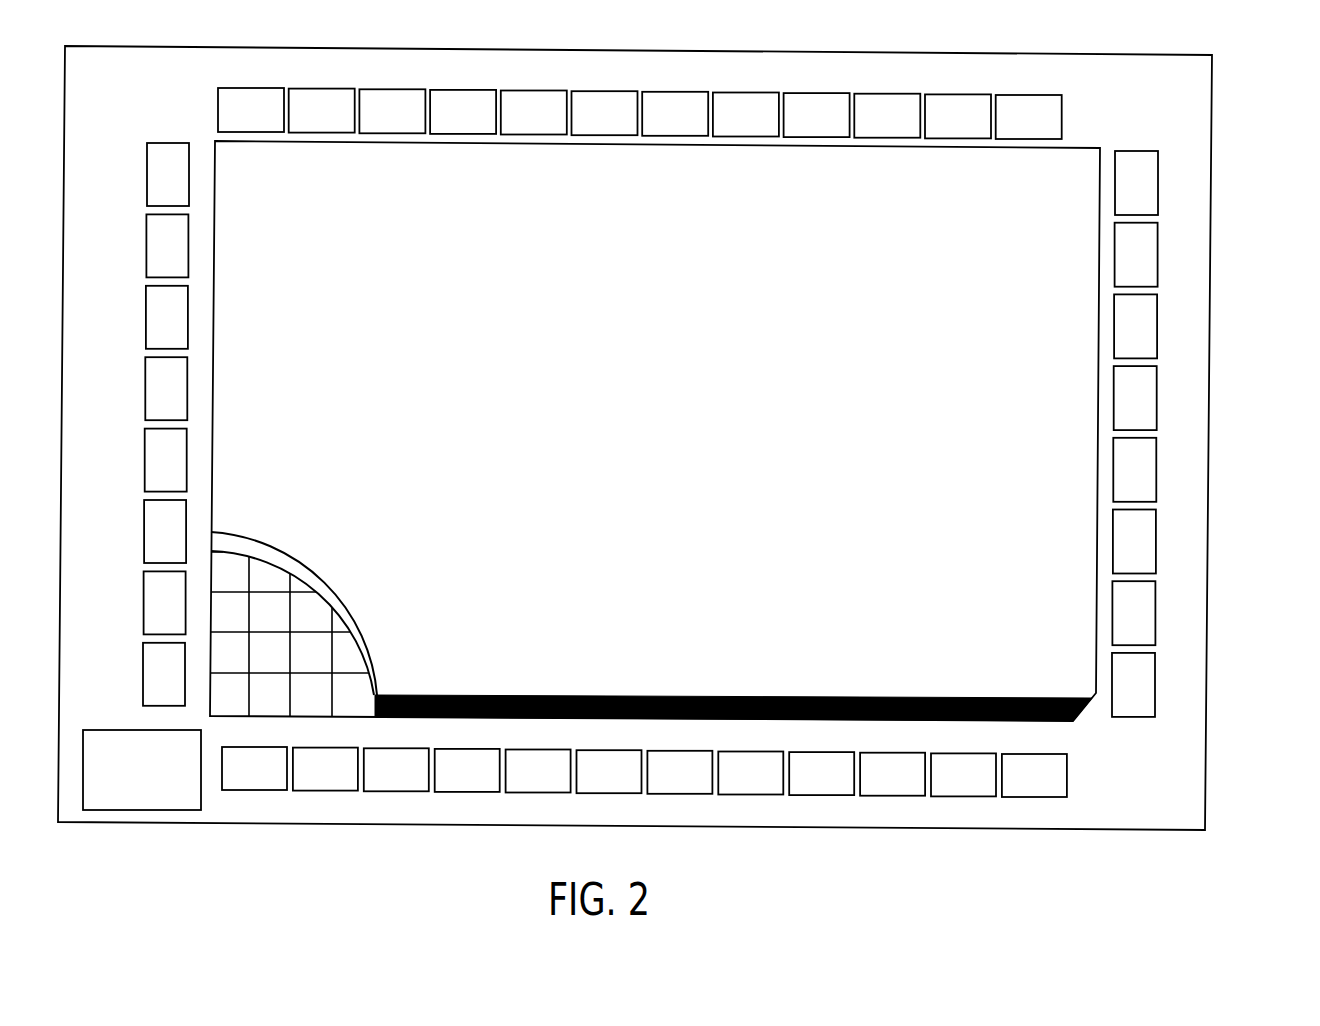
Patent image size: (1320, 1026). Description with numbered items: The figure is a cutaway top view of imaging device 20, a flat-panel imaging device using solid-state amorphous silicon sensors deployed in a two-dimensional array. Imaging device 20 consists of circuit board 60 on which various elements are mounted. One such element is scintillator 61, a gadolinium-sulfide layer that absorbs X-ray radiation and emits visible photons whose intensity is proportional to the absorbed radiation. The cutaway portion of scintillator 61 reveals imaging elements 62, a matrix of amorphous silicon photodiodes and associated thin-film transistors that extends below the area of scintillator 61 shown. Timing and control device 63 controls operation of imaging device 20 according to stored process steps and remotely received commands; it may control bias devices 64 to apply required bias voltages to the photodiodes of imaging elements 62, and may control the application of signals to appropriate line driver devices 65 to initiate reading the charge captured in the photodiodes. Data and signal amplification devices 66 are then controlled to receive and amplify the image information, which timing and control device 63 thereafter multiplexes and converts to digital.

The imaging device 20 is at (1278, 126).
The circuit board 60 is at (1213, 290).
The scintillator 61 is at (285, 560).
The imaging elements 62 is at (318, 618).
The timing and control device 63 is at (126, 728).
The bias devices 64 is at (498, 88).
The line driver devices 65 is at (138, 424).
The data and signal amplification devices 66 is at (1042, 802).